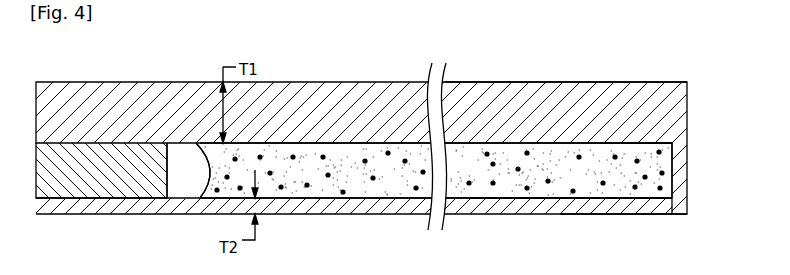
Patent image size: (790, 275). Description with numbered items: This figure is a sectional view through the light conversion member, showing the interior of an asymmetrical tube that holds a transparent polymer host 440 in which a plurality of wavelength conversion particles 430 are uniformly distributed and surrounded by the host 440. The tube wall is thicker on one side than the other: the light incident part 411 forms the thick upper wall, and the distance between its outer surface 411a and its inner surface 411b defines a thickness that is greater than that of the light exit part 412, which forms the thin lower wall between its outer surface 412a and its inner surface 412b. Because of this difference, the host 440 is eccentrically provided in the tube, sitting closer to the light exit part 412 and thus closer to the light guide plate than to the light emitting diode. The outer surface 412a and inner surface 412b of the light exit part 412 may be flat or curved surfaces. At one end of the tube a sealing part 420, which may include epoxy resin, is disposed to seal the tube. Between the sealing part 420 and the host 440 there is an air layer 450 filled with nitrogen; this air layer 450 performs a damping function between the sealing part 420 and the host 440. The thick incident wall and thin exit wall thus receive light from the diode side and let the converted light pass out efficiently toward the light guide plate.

The light incident part 411 is at (98, 95).
The outer surface of the light incident part 411a is at (553, 82).
The inner surface of the light incident part 411b is at (623, 144).
The light exit part 412 is at (405, 207).
The outer surface of the light exit part 412a is at (643, 214).
The inner surface of the light exit part 412b is at (530, 197).
The sealing part 420 is at (122, 190).
The wavelength conversion particles 430 is at (343, 192).
The host 440 is at (296, 192).
The air layer 450 is at (192, 155).